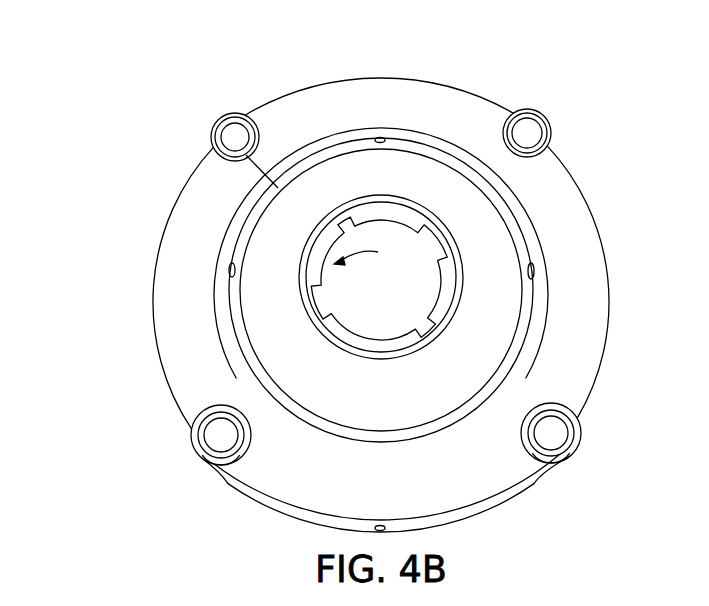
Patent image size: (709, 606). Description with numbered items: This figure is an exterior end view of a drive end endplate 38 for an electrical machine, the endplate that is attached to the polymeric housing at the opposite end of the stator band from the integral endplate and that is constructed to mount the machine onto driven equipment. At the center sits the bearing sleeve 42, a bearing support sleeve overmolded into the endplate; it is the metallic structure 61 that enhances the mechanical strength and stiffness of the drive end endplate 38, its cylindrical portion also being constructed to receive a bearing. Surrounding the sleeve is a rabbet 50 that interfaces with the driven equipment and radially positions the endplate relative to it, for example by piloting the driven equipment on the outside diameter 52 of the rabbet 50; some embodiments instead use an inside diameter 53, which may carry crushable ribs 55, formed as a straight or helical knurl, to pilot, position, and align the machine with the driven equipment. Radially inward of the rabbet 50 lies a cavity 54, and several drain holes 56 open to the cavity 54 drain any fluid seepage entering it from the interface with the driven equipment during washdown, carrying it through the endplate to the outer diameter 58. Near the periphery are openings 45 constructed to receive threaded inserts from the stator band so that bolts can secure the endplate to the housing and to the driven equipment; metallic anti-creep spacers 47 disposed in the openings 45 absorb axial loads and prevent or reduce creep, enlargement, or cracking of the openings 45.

The drive end endplate 38 is at (172, 80).
The bearing sleeve 42 is at (440, 287).
The openings 45 is at (222, 138).
The anti-creep spacers 47 is at (240, 124).
The rabbet 50 is at (448, 432).
The outside diameter 52 is at (545, 322).
The inside diameter 53 is at (500, 193).
The cavity 54 is at (419, 172).
The crushable ribs 55 is at (265, 192).
The drain holes 56 is at (380, 137).
The outer diameter 58 is at (152, 292).
The metallic structure 61 is at (371, 250).